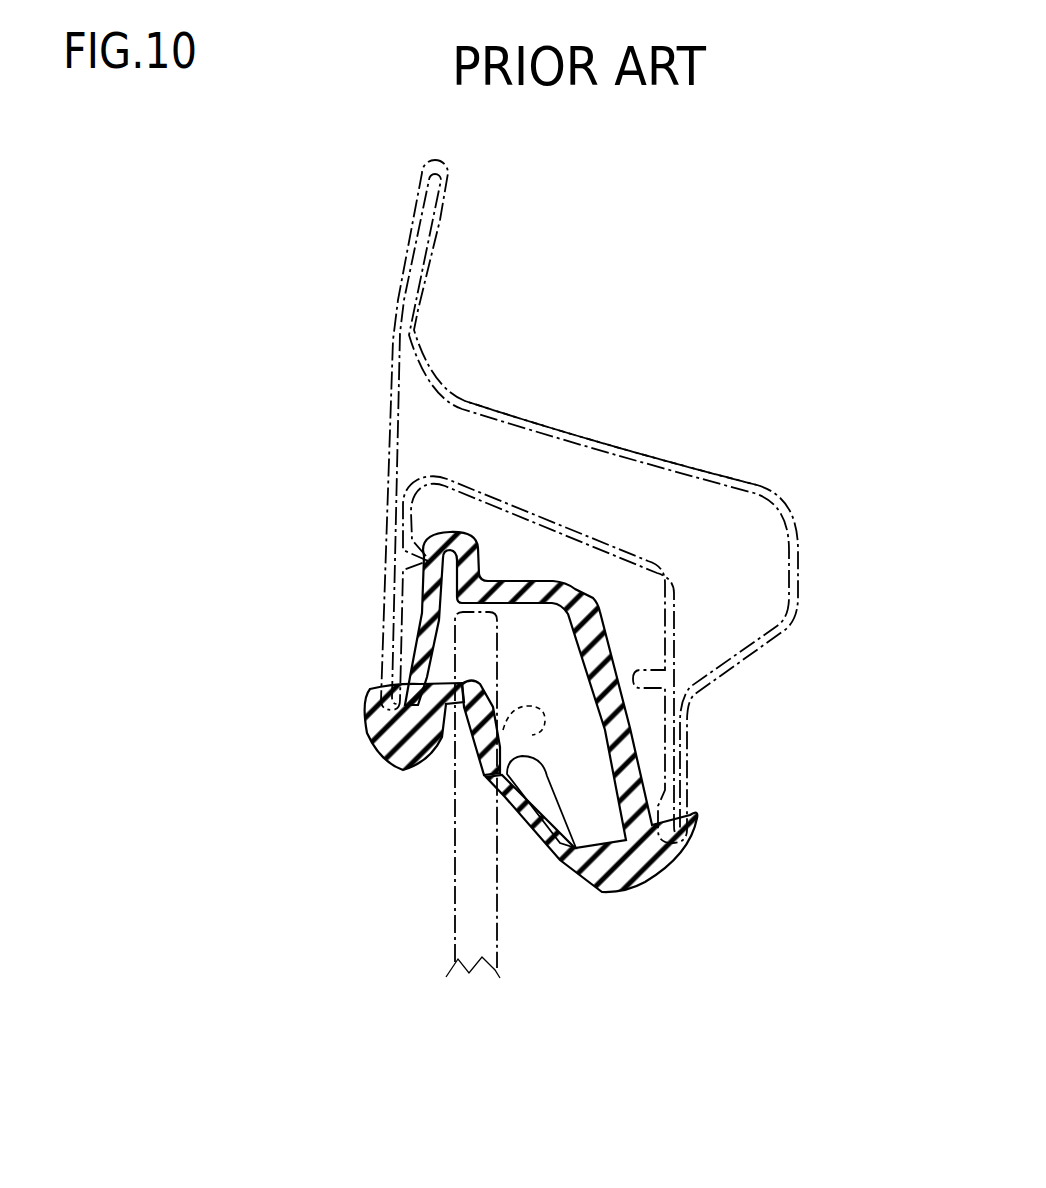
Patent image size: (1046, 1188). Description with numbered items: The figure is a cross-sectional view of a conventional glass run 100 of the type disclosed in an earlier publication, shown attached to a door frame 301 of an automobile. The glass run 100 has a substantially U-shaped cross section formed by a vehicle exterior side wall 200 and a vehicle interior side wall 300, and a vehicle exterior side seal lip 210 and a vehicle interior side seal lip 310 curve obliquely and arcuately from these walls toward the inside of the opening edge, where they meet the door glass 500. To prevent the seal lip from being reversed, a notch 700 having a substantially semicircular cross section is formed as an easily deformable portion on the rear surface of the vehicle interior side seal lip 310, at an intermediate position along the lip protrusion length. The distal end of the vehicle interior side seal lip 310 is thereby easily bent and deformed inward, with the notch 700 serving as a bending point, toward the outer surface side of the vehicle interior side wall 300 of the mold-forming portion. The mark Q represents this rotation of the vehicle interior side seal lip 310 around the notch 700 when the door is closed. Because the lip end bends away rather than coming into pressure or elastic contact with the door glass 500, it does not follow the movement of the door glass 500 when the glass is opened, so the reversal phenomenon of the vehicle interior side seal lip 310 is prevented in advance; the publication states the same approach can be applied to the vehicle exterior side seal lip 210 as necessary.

The glass run 100 is at (521, 774).
The vehicle exterior side wall 200 is at (430, 622).
The vehicle exterior side seal lip 210 is at (443, 737).
The vehicle interior side wall 300 is at (621, 501).
The door frame 301 is at (578, 431).
The vehicle interior side seal lip 310 is at (487, 765).
The door glass 500 is at (455, 891).
The notch 700 is at (576, 848).
The rotation of the vehicle interior side seal lip Q is at (538, 735).